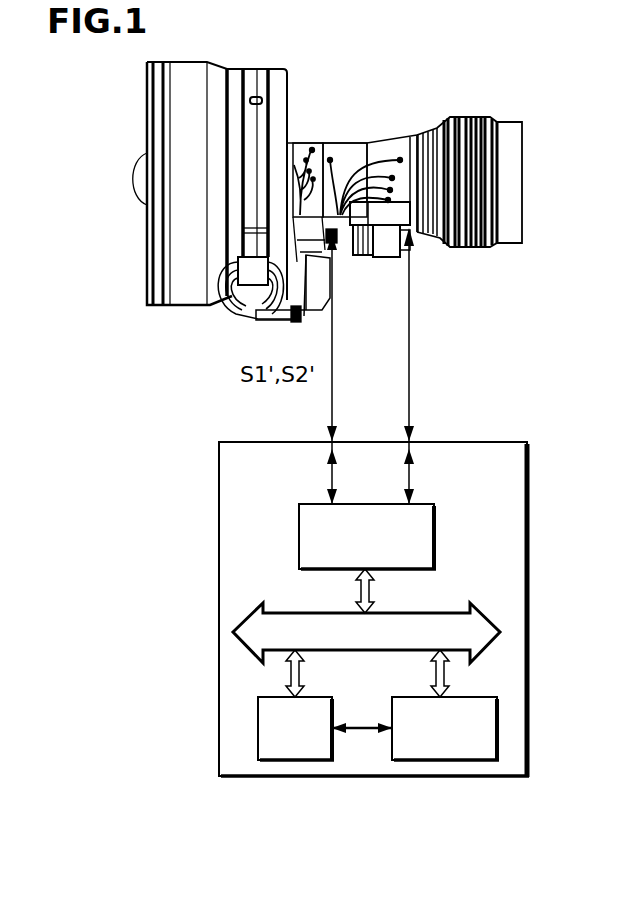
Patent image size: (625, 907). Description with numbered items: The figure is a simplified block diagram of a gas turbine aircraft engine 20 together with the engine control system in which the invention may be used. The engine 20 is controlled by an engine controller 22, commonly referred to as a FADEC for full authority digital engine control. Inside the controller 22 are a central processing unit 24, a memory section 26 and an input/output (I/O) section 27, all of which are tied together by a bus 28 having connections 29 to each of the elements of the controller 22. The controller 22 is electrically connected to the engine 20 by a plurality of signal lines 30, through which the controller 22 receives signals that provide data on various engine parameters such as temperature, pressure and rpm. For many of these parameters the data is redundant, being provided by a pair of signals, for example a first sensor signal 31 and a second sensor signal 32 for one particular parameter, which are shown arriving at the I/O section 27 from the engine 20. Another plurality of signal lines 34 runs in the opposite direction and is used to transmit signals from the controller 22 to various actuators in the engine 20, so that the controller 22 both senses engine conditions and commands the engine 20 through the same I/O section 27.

The gas turbine aircraft engine 20 is at (414, 110).
The engine controller 22 is at (458, 436).
The central processing unit 24 is at (316, 697).
The memory section 26 is at (465, 697).
The input/output (I/O) section 27 is at (422, 503).
The bus 28 is at (437, 613).
The connections 29 is at (362, 594).
The signal lines 30 is at (334, 268).
The signal S1' 31 is at (250, 388).
The signal S2' 32 is at (303, 388).
The signal lines 34 is at (413, 266).